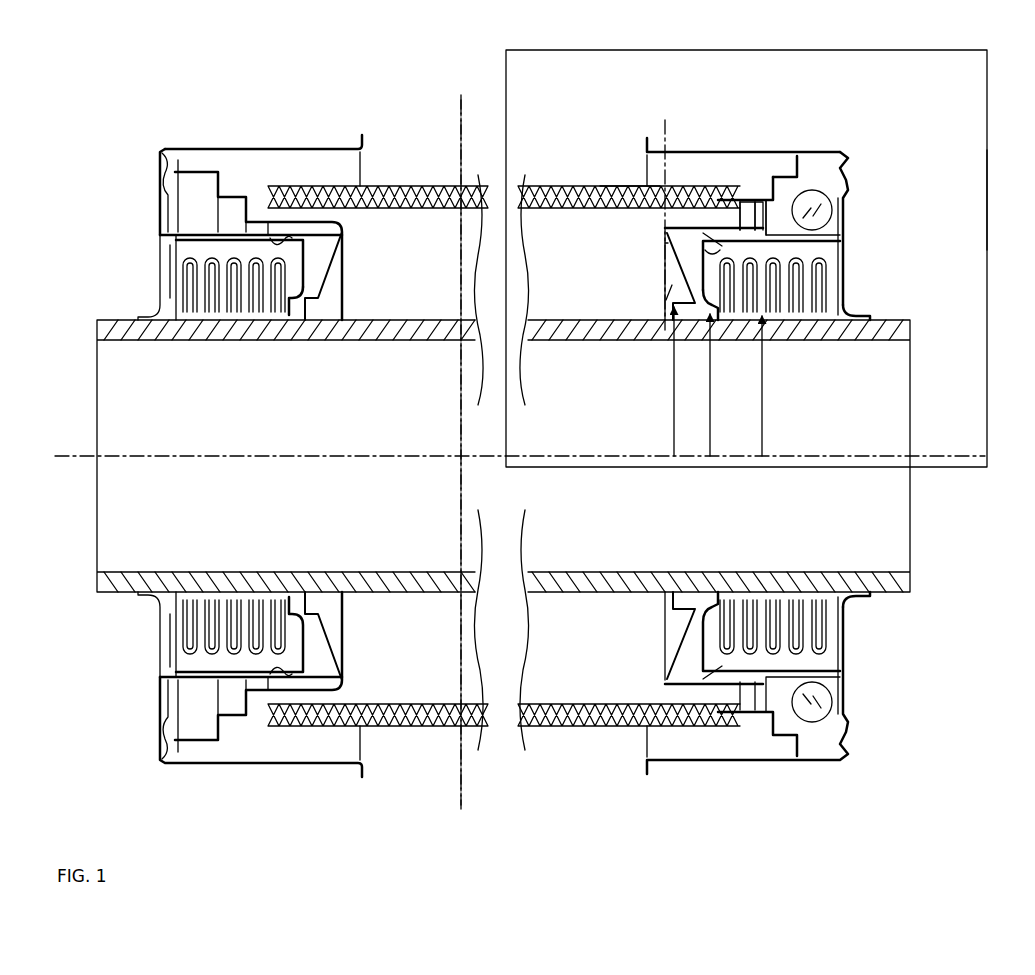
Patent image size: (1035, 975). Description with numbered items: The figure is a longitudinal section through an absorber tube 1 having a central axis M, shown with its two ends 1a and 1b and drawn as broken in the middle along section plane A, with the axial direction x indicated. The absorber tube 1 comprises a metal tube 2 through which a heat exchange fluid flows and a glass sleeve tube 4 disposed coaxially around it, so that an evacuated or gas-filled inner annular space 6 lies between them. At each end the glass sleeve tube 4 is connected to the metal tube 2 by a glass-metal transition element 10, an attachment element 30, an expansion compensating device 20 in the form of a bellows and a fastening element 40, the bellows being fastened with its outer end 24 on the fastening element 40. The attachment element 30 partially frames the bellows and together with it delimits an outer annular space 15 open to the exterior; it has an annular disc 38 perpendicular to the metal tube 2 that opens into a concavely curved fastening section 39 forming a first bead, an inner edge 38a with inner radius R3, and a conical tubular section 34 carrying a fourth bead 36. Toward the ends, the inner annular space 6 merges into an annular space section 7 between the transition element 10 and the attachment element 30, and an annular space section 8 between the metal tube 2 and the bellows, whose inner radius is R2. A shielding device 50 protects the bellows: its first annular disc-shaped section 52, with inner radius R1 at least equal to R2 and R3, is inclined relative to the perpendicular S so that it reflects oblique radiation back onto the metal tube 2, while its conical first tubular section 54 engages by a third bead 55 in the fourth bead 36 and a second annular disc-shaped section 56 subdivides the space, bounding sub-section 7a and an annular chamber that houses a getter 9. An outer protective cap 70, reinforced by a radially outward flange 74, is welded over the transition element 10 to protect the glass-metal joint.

The absorber tube 1 is at (123, 109).
The end of the absorber tube 1a is at (98, 236).
The end of the absorber tube 1b is at (897, 126).
The metal tube 2 is at (912, 323).
The glass sleeve tube 4 is at (540, 190).
The inner annular space 6 is at (556, 271).
The annular space section 7 is at (753, 213).
The sub-section of the annular space section 7a is at (714, 224).
The annular space section 8 is at (808, 318).
The getter 9 is at (826, 206).
The glass-metal transition element 10 is at (836, 152).
The outer annular space 15 is at (170, 240).
The expansion compensating device 20 is at (825, 273).
The outer end of the expansion compensating device 24 is at (841, 243).
The attachment element 30 is at (697, 250).
The tubular section of the attachment element 34 is at (841, 237).
The fourth bead 36 is at (268, 245).
The annular disc 38 is at (303, 263).
The inner edge of the attachment element 38a is at (712, 312).
The fastening section 39 is at (283, 305).
The fastening element 40 is at (860, 316).
The shielding device 50 is at (662, 232).
The first annular disc-shaped section 52 is at (660, 243).
The first tubular section 54 is at (628, 187).
The third bead 55 is at (282, 236).
The second annular disc-shaped section 56 is at (792, 175).
The outer protective cap 70 is at (776, 192).
The flange 74 is at (365, 148).
The section plane A is at (458, 456).
The perpendicular on the central axis S is at (663, 135).
The central axis M is at (520, 443).
The axial direction x is at (990, 197).
The inner radius of the annular disc-shaped section R1 is at (662, 381).
The inner radius of the expansion compensating device R2 is at (776, 386).
The inner radius of the attachment element R3 is at (725, 385).